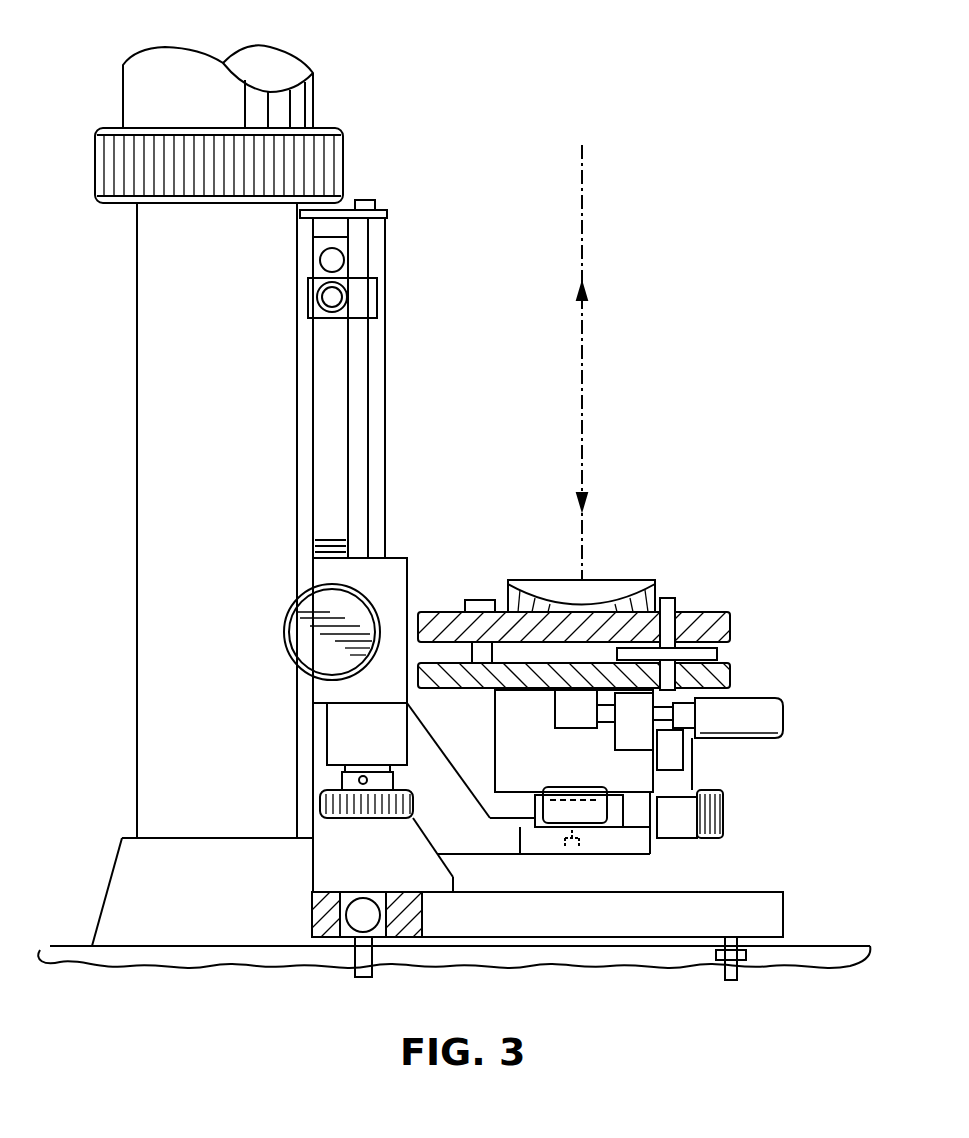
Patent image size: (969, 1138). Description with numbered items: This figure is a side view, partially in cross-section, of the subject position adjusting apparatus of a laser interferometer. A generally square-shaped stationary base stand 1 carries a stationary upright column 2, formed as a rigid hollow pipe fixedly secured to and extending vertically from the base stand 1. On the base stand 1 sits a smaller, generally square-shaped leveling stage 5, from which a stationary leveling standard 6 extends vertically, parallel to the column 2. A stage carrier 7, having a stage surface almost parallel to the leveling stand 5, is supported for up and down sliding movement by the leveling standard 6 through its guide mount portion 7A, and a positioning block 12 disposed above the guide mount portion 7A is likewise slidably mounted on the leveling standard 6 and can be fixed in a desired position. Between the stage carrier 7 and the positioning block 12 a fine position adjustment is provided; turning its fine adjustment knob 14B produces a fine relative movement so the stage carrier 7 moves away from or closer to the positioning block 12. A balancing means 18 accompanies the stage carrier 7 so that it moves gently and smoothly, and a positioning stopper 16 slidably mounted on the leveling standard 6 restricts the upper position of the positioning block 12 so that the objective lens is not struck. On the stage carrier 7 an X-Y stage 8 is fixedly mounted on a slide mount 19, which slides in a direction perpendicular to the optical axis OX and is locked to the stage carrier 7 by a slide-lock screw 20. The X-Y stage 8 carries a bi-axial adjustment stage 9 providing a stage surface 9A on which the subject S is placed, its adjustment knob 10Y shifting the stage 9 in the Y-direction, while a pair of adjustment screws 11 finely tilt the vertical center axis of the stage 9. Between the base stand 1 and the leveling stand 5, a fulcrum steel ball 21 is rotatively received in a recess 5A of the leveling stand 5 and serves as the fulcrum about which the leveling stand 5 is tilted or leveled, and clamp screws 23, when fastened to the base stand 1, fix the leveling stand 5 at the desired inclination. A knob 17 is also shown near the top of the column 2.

The stationary base stand 1 is at (78, 946).
The stationary upright column 2 is at (140, 303).
The leveling stage 5 is at (770, 912).
The recess 5A is at (376, 937).
The stationary leveling standard 6 is at (334, 383).
The stage carrier 7 is at (638, 835).
The guide mount portion 7A is at (335, 740).
The X-Y stage 8 is at (495, 755).
The bi-axial adjustment stage 9 is at (722, 607).
The stage surface 9A is at (700, 612).
The adjustment knob 10Y is at (762, 705).
The adjustment screws 11 is at (730, 655).
The positioning block 12 is at (400, 580).
The fine adjustment knob 14B is at (325, 805).
The positioning stopper 16 is at (355, 290).
The rotary knob / head 17 is at (325, 128).
The balancing means 18 is at (388, 428).
The slide mount 19 is at (535, 805).
The slide-lock screw 20 is at (725, 812).
The fulcrum steel ball 21 is at (348, 892).
The clamp screws 23 is at (738, 940).
The subject S is at (630, 585).
The optical axis OX is at (592, 438).